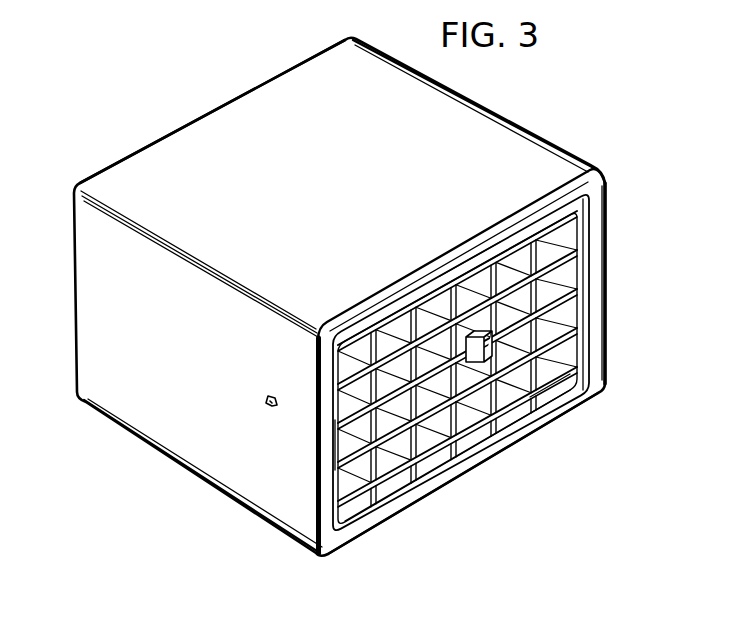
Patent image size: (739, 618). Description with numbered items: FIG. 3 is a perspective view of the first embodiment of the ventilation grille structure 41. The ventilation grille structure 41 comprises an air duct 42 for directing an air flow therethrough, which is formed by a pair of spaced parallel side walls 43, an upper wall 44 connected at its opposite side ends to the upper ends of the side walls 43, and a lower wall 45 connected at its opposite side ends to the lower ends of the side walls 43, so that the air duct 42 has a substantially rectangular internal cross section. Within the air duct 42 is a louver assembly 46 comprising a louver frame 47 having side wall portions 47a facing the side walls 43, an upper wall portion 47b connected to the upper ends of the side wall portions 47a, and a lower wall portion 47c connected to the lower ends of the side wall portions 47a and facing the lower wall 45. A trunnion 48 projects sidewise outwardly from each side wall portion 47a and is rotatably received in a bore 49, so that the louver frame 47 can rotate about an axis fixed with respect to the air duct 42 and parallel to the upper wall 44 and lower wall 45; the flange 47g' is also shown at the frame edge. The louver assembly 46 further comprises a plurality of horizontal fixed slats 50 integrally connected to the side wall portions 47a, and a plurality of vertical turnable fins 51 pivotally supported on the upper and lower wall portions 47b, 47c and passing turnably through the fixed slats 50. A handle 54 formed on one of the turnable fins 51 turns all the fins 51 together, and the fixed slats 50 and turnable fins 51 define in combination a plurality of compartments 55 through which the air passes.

The ventilation grille structure 41 is at (194, 482).
The air duct 42 is at (224, 102).
The side wall 43 is at (80, 261).
The upper wall 44 is at (482, 124).
The lower wall 45 is at (424, 505).
The louver assembly 46 is at (507, 396).
The louver frame 47 is at (580, 314).
The side wall portion 47a is at (333, 468).
The upper wall portion 47b is at (467, 262).
The lower wall portion 47c is at (550, 406).
The flange 47g' is at (625, 294).
The trunnion 48 is at (266, 399).
The bore 49 is at (277, 405).
The horizontal fixed slat 50 is at (358, 464).
The vertical turnable fin 51 is at (420, 305).
The handle 54 is at (484, 364).
The compartment 55 is at (557, 322).